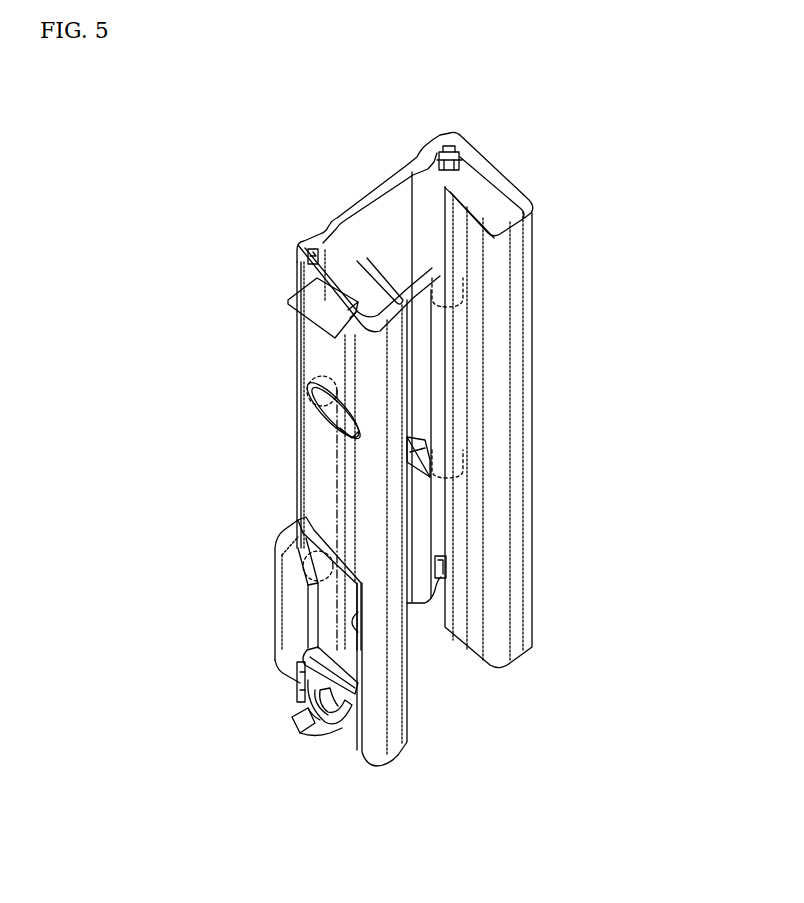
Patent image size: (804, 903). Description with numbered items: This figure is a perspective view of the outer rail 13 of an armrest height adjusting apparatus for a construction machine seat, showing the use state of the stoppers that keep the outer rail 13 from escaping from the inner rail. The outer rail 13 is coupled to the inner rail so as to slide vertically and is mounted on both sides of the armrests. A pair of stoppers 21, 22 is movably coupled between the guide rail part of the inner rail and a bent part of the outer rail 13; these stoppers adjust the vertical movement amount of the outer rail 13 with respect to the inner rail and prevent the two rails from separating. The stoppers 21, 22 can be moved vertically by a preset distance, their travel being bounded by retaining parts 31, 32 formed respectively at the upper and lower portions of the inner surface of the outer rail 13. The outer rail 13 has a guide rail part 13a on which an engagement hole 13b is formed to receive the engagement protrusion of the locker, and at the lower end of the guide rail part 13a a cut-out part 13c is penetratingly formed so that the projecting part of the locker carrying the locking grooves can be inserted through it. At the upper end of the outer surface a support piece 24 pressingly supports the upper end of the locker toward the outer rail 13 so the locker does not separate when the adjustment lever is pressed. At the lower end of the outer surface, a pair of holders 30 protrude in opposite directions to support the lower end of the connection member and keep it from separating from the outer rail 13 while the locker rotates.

The outer rail 13 is at (516, 157).
The retaining part 31 is at (442, 146).
The stopper 22 is at (443, 277).
The support piece 24 is at (298, 302).
The guide rail part 13a is at (320, 360).
The engagement hole 13b is at (333, 421).
The stopper 21 is at (303, 472).
The cut-out part 13c is at (362, 630).
The retaining part 32 is at (443, 580).
The holder 30 is at (298, 718).